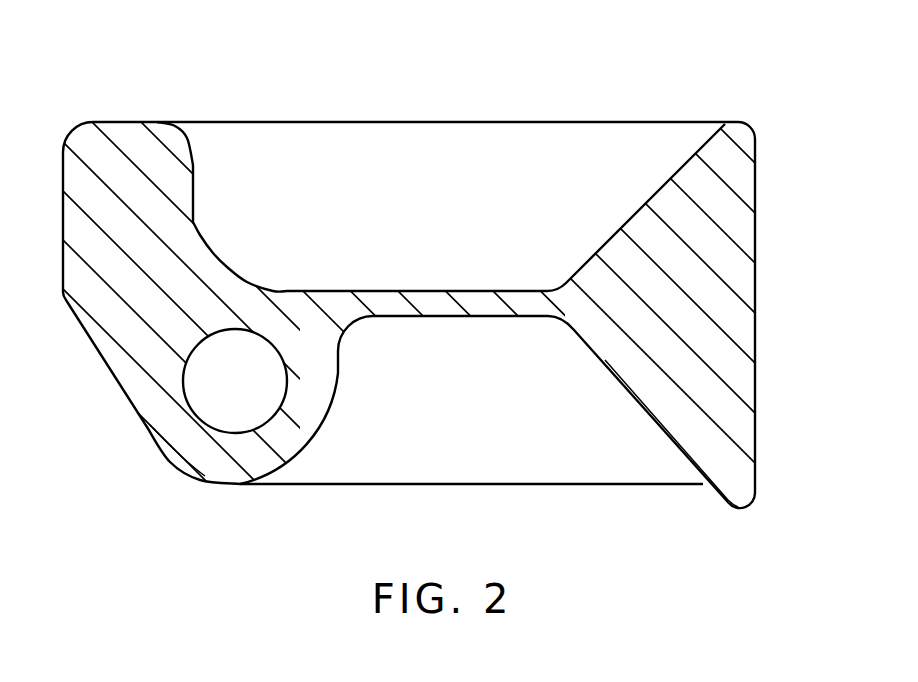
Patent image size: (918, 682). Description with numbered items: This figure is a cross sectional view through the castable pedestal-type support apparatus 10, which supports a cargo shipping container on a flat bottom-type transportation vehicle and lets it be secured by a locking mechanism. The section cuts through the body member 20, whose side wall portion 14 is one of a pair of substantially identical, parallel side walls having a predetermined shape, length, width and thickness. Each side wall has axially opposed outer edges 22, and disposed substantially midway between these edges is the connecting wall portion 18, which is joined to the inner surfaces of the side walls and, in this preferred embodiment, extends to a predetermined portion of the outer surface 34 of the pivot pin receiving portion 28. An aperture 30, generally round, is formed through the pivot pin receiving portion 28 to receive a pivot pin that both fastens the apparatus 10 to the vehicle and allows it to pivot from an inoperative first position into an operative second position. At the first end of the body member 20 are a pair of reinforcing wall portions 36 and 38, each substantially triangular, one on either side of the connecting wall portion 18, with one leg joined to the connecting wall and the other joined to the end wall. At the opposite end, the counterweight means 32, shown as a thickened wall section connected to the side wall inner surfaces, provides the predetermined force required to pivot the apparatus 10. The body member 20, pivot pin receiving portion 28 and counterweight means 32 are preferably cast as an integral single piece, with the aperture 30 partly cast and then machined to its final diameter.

The pedestal-type support apparatus 10 is at (520, 104).
The body member 20 is at (629, 115).
The axially opposed outer edge 22 is at (393, 121).
The counterweight means 32 is at (118, 137).
The side wall portion 14 is at (263, 137).
The connecting wall portion 18 is at (429, 297).
The reinforcing wall portion 38 is at (638, 225).
The reinforcing wall portion 36 is at (640, 388).
The outer surface 34 is at (340, 383).
The pivot pin receiving portion 28 is at (212, 467).
The aperture 30 is at (219, 391).